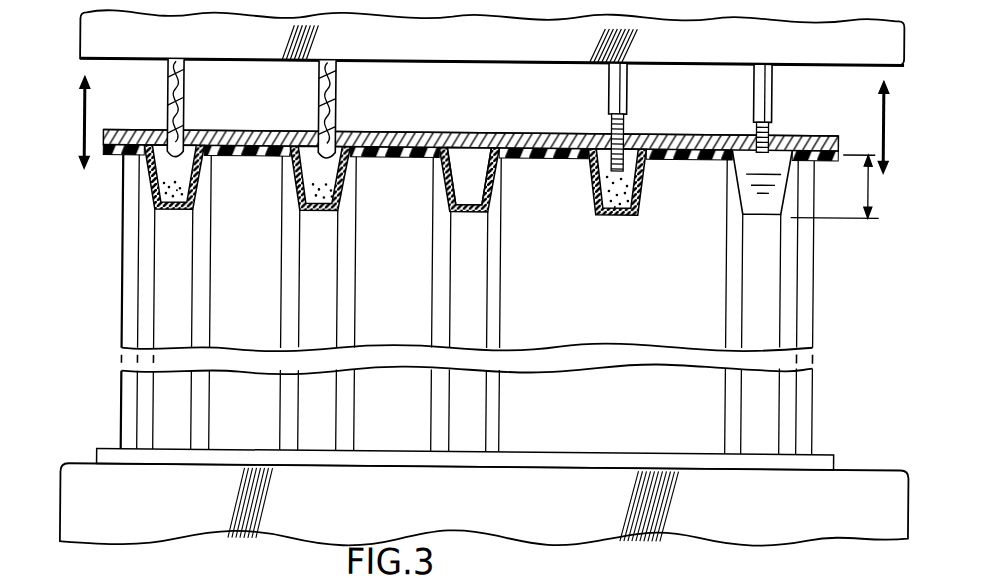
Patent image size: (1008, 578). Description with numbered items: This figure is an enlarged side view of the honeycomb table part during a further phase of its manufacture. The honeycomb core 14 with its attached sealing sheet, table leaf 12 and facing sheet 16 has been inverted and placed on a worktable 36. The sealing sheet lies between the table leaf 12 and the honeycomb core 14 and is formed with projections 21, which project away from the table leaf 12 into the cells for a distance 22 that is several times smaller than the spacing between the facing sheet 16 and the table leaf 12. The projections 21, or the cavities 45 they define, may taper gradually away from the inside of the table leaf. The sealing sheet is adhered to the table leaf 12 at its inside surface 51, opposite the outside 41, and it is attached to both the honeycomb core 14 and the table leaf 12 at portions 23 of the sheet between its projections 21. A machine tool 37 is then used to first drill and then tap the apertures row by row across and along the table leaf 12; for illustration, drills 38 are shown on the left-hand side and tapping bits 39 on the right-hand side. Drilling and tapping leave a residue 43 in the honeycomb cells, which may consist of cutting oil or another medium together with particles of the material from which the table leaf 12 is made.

The table leaf 12 is at (458, 134).
The honeycomb core 14 is at (112, 333).
The facing sheet 16 is at (512, 463).
The projections 21 is at (212, 192).
The distance 22 is at (868, 184).
The portions of the sealing sheet 23 is at (383, 143).
The worktable 36 is at (86, 465).
The machine tool 37 is at (454, 42).
The drills 38 is at (183, 96).
The tapping bits 39 is at (626, 95).
The outside of the table leaf 41 is at (575, 138).
The residue 43 is at (158, 187).
The cavities 45 is at (470, 166).
The inside surface of the table leaf 51 is at (798, 145).